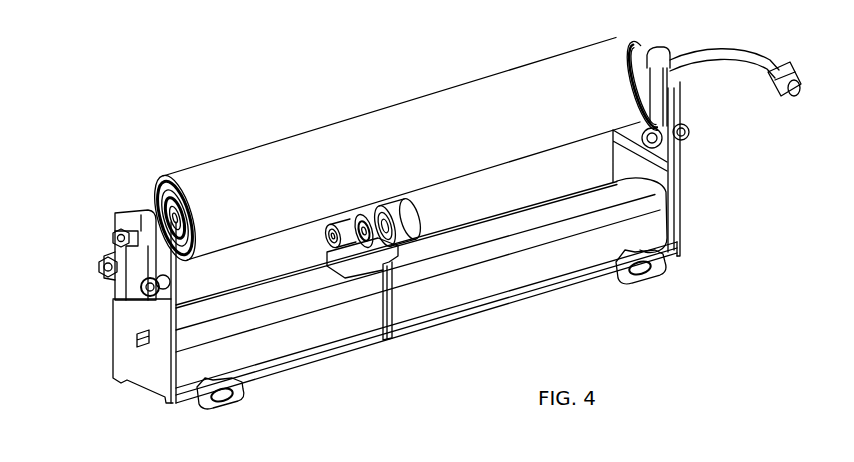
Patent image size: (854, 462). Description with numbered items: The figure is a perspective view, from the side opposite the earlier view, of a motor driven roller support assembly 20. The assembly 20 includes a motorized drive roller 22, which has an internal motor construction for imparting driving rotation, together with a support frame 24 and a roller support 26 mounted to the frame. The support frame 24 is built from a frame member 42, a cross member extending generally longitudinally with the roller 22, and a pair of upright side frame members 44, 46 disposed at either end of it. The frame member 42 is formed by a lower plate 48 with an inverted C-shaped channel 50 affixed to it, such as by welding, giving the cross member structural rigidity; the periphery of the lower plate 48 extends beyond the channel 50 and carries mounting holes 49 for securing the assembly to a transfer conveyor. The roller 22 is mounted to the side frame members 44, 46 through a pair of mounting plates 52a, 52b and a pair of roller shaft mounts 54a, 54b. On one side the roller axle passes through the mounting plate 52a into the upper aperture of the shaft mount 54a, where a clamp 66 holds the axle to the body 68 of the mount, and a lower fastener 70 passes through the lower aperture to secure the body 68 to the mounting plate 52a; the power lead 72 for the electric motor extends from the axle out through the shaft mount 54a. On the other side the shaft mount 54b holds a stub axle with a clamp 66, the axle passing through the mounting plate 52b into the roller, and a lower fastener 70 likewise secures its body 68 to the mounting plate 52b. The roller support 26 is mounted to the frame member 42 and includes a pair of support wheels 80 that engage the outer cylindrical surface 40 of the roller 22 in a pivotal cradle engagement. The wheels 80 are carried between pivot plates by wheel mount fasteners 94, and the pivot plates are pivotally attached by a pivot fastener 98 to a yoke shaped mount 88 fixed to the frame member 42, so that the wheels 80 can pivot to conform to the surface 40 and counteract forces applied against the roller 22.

The motor driven roller support assembly 20 is at (255, 95).
The motorized drive roller 22 is at (518, 55).
The support frame 24 is at (698, 233).
The roller support 26 is at (412, 250).
The outer cylindrical surface 40 is at (413, 127).
The frame member 42 is at (297, 343).
The side frame member 44 is at (678, 177).
The side frame member 46 is at (123, 335).
The lower plate 48 is at (563, 287).
The mounting holes 49 is at (222, 400).
The inverted C-shaped channel 50 is at (583, 207).
The mounting plate 52a is at (655, 110).
The mounting plate 52b is at (165, 232).
The roller shaft mount 54a is at (657, 50).
The roller shaft mount 54b is at (115, 217).
The clamp 66 is at (117, 237).
The body 68 is at (135, 213).
The lower fastener 70 is at (110, 278).
The power lead 72 is at (777, 65).
The support wheels 80 is at (390, 220).
The yoke shaped mount 88 is at (393, 312).
The wheel mount fasteners 94 is at (360, 233).
The pivot fastener 98 is at (325, 245).